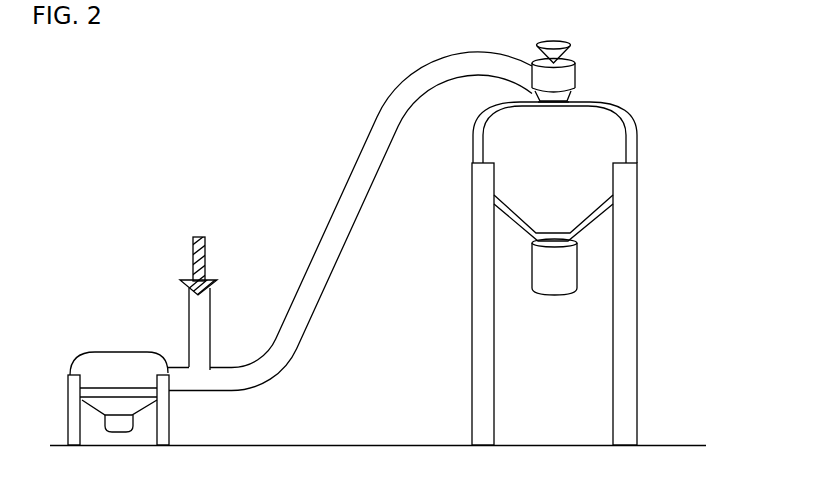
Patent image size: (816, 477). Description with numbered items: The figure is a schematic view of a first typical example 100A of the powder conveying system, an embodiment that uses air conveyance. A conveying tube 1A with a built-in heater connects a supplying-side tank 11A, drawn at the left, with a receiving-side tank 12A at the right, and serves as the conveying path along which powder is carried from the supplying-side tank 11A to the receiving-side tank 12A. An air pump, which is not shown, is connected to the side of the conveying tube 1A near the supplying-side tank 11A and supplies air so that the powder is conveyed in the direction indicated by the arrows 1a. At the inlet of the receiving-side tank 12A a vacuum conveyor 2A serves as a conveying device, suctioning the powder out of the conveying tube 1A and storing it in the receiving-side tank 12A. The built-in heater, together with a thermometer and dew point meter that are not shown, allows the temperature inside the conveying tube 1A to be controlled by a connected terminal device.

The first typical example of the powder conveying system 100A is at (218, 116).
The conveying tube with a built-in heater 1A is at (339, 200).
The arrows 1a is at (203, 237).
The supplying-side tank 11A is at (125, 352).
The receiving-side tank 12A is at (637, 147).
The vacuum conveyor 2A is at (577, 80).